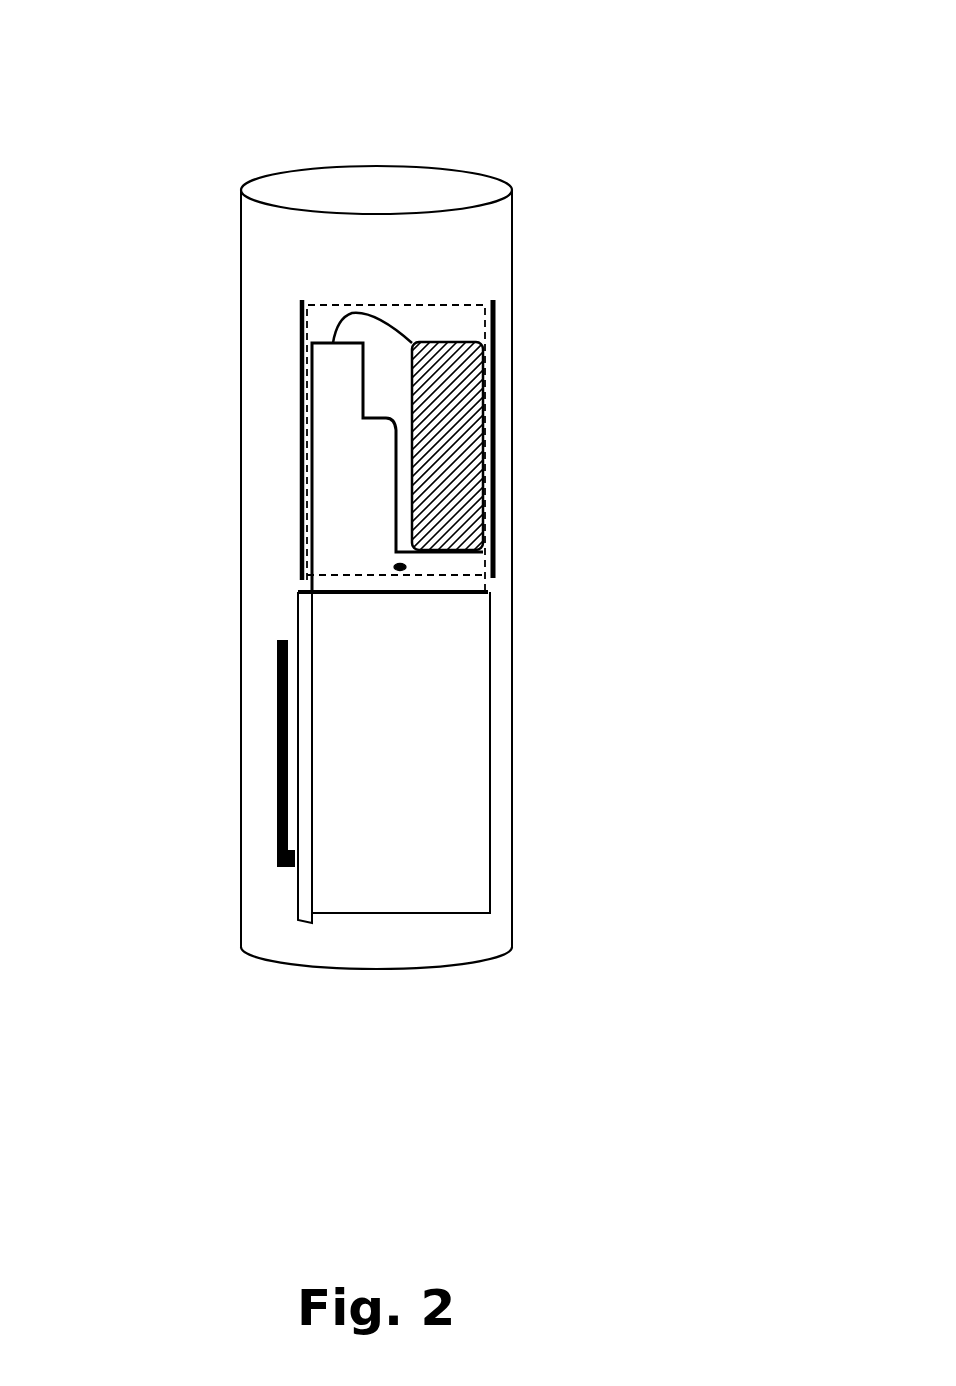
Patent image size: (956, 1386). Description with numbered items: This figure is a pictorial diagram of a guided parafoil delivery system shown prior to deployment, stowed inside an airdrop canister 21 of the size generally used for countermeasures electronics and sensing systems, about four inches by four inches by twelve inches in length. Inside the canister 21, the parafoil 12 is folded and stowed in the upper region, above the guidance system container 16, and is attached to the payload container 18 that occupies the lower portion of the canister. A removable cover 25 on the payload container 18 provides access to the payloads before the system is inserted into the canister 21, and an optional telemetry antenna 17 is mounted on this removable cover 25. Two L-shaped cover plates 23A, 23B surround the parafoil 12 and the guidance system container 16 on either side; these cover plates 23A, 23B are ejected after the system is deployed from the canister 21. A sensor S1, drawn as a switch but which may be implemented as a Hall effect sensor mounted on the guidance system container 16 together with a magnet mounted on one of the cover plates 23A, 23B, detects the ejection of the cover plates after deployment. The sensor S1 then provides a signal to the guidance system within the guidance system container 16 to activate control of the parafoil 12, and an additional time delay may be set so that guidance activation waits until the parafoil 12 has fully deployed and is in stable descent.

The canister 21 is at (484, 146).
The L-shaped cover plate 23A is at (278, 294).
The L-shaped cover plate 23B is at (504, 279).
The parafoil 12 is at (506, 367).
The guidance system container 16 is at (276, 596).
The sensor S1 is at (428, 589).
The telemetry antenna 17 is at (254, 771).
The removable cover 25 is at (276, 905).
The payload container 18 is at (422, 941).